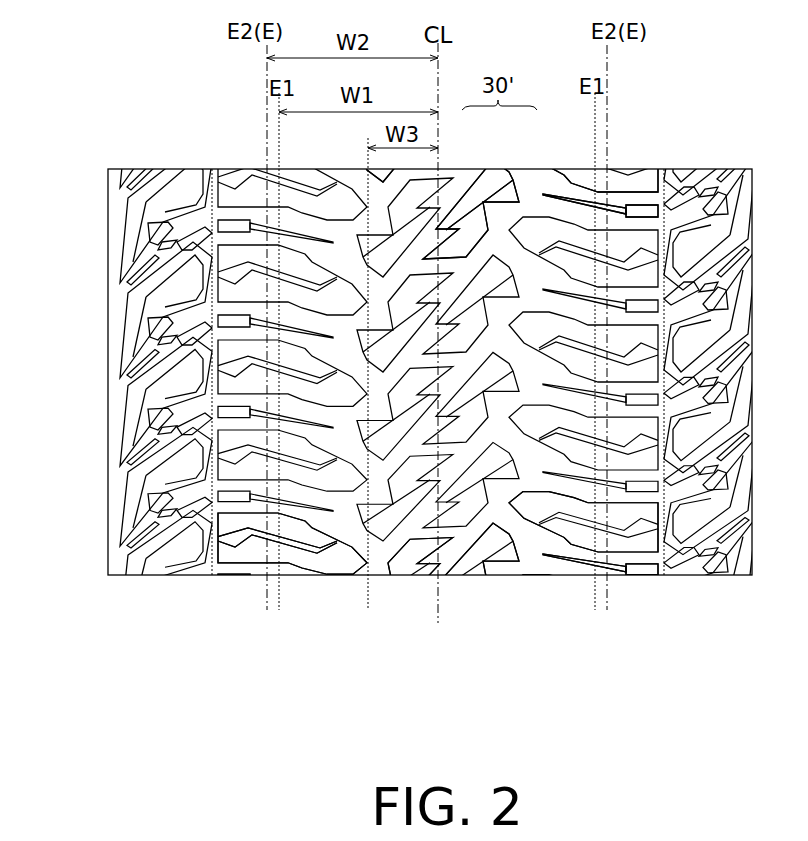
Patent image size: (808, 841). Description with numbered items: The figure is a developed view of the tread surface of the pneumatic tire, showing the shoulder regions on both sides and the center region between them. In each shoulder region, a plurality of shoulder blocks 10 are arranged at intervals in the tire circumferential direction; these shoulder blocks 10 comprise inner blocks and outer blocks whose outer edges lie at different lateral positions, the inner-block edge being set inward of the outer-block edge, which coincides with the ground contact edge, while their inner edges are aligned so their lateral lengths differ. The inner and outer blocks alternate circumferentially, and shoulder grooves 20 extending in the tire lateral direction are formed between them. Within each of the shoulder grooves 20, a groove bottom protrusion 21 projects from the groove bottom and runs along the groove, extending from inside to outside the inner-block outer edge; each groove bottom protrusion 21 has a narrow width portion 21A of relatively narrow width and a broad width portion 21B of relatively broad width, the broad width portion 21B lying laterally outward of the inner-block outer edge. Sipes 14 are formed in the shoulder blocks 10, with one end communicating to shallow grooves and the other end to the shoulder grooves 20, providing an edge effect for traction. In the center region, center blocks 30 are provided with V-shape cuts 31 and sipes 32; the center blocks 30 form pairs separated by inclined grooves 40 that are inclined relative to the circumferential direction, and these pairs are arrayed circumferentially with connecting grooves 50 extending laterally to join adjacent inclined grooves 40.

The shoulder blocks 10 is at (323, 565).
The sipes 14 is at (296, 575).
The shoulder grooves 20 is at (568, 190).
The groove bottom protrusions 21 is at (623, 183).
The narrow width portions 21A is at (583, 567).
The broad width portions 21B is at (640, 570).
The center blocks 30 is at (428, 185).
The V-shape cuts 31 is at (537, 188).
The sipes 32 is at (387, 560).
The inclined grooves 40 is at (470, 567).
The connecting grooves 50 is at (450, 552).